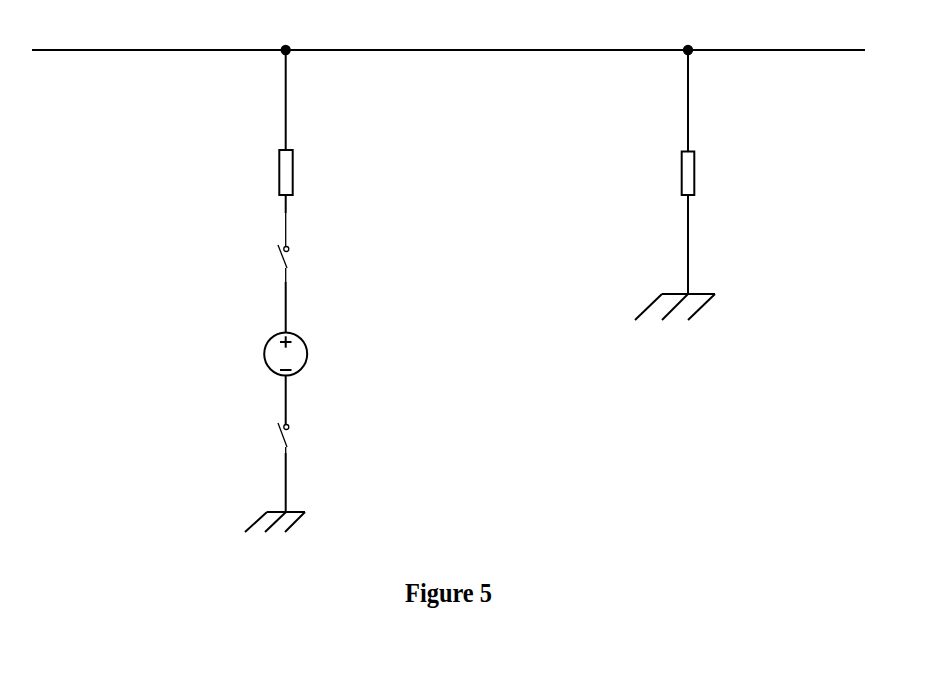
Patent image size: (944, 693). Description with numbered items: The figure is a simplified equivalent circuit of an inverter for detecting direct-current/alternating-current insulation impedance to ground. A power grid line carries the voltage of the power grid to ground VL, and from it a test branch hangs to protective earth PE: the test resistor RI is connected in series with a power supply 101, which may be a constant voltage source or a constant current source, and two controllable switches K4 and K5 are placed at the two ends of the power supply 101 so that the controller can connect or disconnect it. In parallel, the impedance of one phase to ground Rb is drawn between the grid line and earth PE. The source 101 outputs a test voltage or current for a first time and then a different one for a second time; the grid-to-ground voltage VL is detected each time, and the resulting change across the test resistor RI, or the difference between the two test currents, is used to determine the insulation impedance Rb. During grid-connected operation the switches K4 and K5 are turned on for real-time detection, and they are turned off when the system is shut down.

The constant voltage source 101 is at (262, 354).
The test resistor RI is at (272, 173).
The impedance of one phase to ground Rb is at (673, 174).
The controllable switch K4 is at (267, 247).
The controllable switch K5 is at (267, 437).
The voltage of the power grid to ground VL is at (448, 36).
The protective earth PE is at (506, 414).